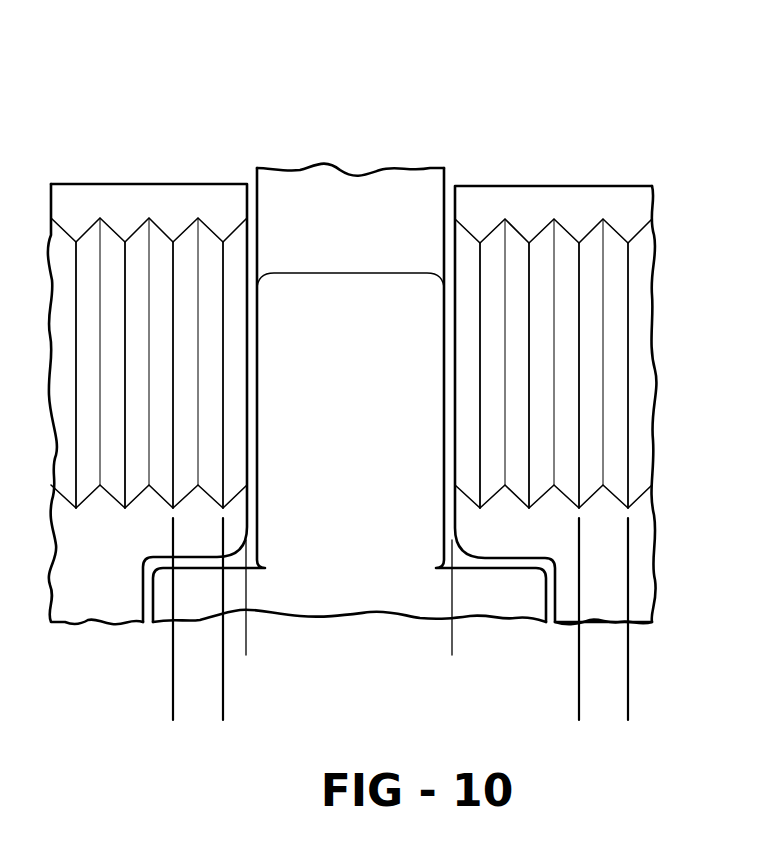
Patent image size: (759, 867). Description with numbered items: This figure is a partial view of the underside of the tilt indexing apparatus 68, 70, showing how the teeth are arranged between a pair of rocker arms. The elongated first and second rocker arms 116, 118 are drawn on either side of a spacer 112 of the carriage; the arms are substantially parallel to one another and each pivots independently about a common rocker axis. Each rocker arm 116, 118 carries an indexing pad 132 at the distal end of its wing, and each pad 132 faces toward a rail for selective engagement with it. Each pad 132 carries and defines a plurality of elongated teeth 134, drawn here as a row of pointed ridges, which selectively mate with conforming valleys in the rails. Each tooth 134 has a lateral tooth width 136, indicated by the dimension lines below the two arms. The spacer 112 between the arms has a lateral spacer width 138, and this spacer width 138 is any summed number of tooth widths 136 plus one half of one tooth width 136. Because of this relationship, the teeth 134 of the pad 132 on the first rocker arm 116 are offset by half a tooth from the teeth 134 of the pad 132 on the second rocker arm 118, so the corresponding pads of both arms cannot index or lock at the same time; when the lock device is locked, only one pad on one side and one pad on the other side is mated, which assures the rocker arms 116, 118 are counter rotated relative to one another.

The indexing apparatus 68 is at (418, 122).
The electrode assembly 70 is at (418, 122).
The spacer 112 is at (353, 295).
The first rocker arm 116 is at (89, 176).
The second rocker arm 118 is at (535, 177).
The indexing pad 132 is at (236, 371).
The teeth 134 is at (100, 218).
The tooth width 136 is at (92, 673).
The spacer width 138 is at (254, 636).